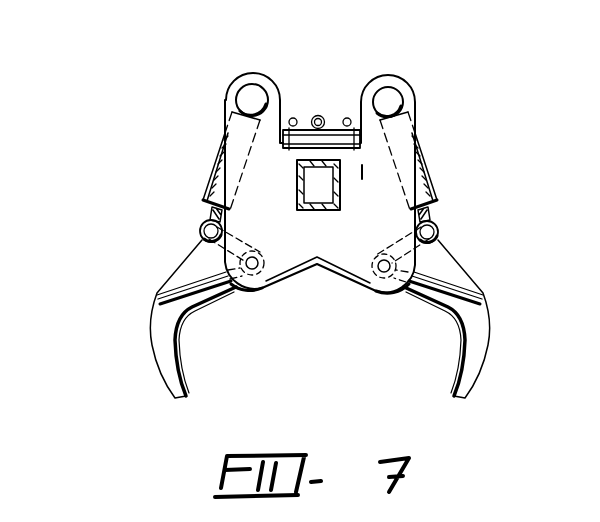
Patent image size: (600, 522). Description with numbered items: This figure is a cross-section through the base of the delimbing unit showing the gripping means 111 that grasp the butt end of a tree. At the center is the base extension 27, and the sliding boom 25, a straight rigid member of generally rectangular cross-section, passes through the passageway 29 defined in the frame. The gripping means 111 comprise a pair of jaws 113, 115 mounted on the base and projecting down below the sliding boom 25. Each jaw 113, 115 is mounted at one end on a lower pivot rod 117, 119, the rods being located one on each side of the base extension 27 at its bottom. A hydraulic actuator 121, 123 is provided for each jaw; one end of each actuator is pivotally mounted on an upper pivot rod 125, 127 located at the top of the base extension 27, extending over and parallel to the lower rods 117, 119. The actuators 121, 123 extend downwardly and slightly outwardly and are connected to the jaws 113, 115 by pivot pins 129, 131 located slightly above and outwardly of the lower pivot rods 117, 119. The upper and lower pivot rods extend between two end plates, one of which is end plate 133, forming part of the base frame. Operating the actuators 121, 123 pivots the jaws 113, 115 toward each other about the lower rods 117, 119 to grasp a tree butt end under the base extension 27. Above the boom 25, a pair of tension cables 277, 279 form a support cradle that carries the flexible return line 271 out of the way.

The gripping means 111 is at (140, 275).
The jaw 113 is at (488, 333).
The jaw 115 is at (155, 358).
The lower pivot rod 117 is at (386, 278).
The lower pivot rod 119 is at (243, 290).
The hydraulic actuator 121 is at (434, 191).
The hydraulic actuator 123 is at (216, 186).
The upper pivot rod 125 is at (410, 108).
The upper pivot rod 127 is at (250, 79).
The pivot pin 129 is at (438, 228).
The pivot pin 131 is at (199, 229).
The end plate 133 is at (291, 247).
The sliding boom 25 is at (343, 205).
The base extension 27 is at (364, 172).
The passageway 29 is at (296, 166).
The flexible return line 271 is at (320, 116).
The tension cable 277 is at (350, 117).
The tension cable 279 is at (293, 117).